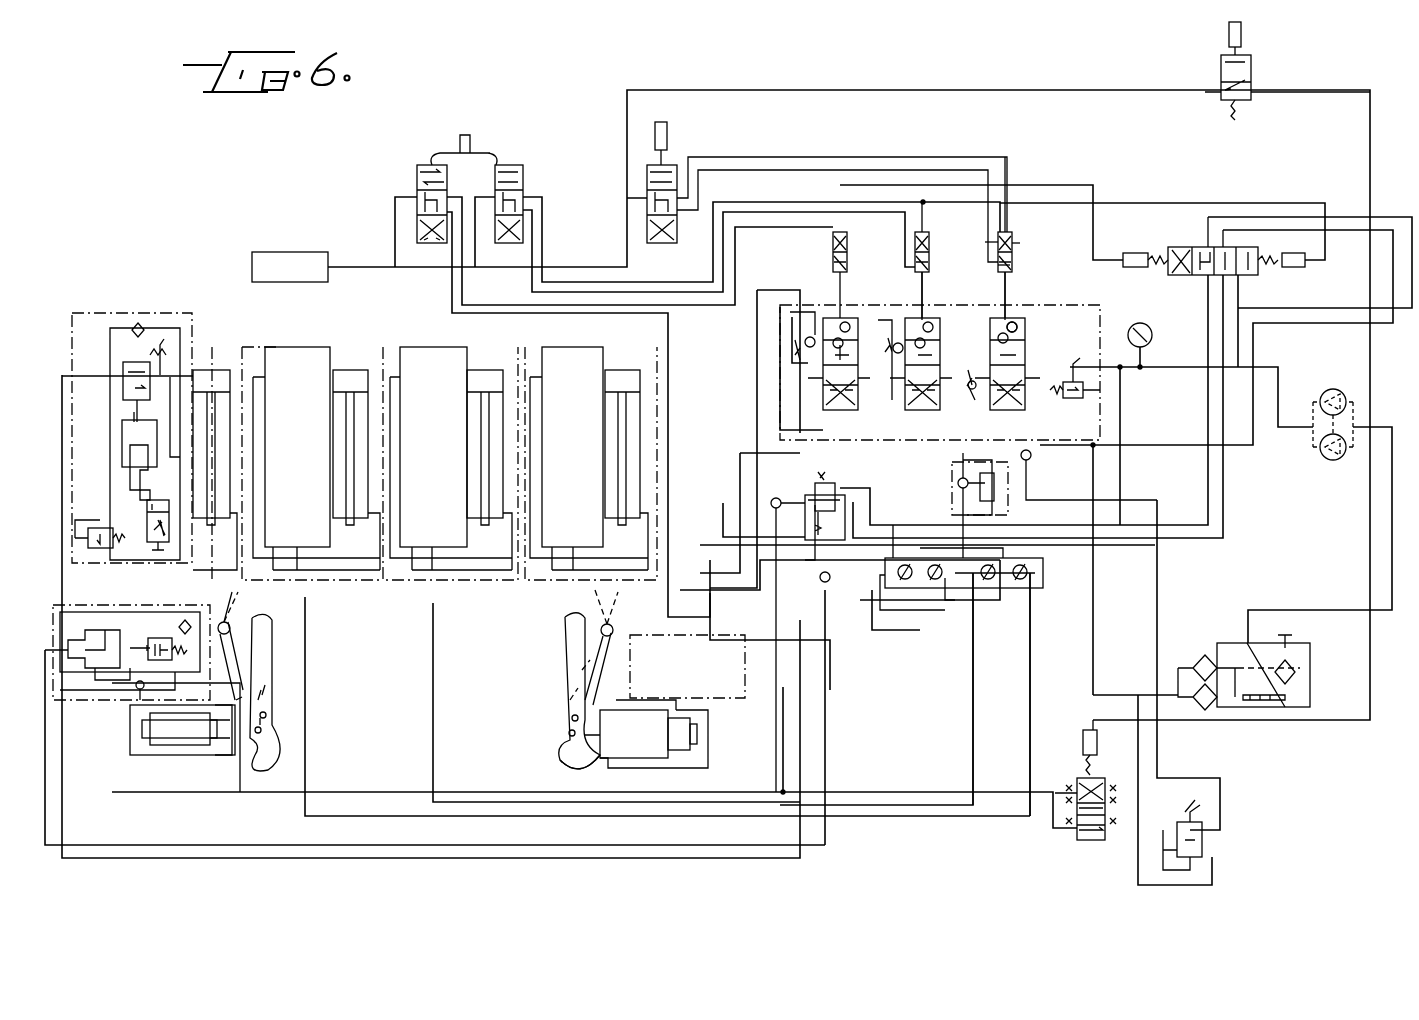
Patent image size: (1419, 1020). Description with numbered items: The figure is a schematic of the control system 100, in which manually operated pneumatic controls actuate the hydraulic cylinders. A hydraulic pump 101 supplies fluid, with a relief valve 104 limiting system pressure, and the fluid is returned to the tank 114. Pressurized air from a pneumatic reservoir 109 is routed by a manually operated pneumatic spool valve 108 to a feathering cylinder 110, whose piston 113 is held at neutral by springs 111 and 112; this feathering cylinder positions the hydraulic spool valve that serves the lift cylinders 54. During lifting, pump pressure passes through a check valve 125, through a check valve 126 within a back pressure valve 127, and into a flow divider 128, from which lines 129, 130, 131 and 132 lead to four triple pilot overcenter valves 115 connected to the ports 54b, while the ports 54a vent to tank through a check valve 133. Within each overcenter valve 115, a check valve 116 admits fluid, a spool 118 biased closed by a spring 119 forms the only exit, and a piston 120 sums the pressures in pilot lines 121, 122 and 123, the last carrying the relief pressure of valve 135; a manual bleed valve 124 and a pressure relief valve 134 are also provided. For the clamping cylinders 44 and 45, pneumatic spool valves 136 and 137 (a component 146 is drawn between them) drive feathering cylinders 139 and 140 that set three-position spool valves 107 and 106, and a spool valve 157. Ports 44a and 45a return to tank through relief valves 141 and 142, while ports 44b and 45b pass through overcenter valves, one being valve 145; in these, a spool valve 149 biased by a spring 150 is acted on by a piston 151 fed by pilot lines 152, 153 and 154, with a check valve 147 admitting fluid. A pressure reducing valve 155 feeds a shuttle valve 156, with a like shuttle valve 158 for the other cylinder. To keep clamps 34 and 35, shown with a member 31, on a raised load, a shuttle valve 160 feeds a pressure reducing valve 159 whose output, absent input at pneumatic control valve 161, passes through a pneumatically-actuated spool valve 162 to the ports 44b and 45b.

The control system 100 is at (223, 183).
The pneumatic reservoir 109 is at (298, 248).
The pneumatic spool valve 136 is at (417, 168).
The manual lever 146 is at (474, 148).
The pneumatic spool valve 137 is at (523, 170).
The pneumatic spool valve 108 is at (673, 165).
The pneumatic control valve 161 is at (1251, 63).
The feathering cylinder 139 is at (833, 244).
The feathering cylinder 140 is at (929, 240).
The feathering cylinder 110 is at (1012, 238).
The spring 111 is at (990, 245).
The spring 112 is at (1000, 266).
The feathering cylinder piston 113 is at (1016, 244).
The spool valve 157 is at (1178, 243).
The triple pilot overcenter valve 115 is at (135, 312).
The check valve 116 is at (143, 325).
The spring 119 is at (140, 355).
The pilot line 122 is at (160, 375).
The lift cylinder port 54b is at (205, 365).
The lift frame actuating cylinder 54 is at (612, 368).
The lift cylinder port 54a is at (645, 522).
The spool 118 is at (126, 390).
The pilot line 121 is at (123, 430).
The piston 120 is at (135, 460).
The pilot line 123 is at (138, 497).
The bleed valve 124 is at (160, 500).
The pressure relief valve 134 is at (98, 548).
The piston 151 is at (120, 628).
The pilot line 152 is at (150, 640).
The spool valve 149 is at (185, 615).
The pilot line 154 is at (108, 640).
The pilot line 153 is at (115, 680).
The spring 150 is at (170, 660).
The check valve 147 is at (137, 688).
The clamping cylinder 44 is at (238, 712).
The clamping cylinder port 44a is at (152, 716).
The clamping cylinder port 44b is at (225, 760).
The lever arm 31 is at (598, 648).
The clamp 34 is at (272, 665).
The clamp 35 is at (563, 668).
The clamping cylinder 45 is at (640, 710).
The clamping cylinder port 45a is at (680, 702).
The clamping cylinder port 45b is at (590, 760).
The three-position spool valve 107 is at (826, 312).
The relief valve 142 is at (878, 317).
The three-position spool valve 106 is at (917, 318).
The relief valve 141 is at (805, 342).
The check valve 133 is at (1000, 338).
The relief valve 135 is at (972, 378).
The triple pilot overcenter valve 145 is at (1025, 320).
The check valve 125 is at (1020, 326).
The relief valve 104 is at (1075, 382).
The hydraulic pump 101 is at (1333, 460).
The pressure reducing valve 155 is at (835, 488).
The shuttle valve 158 is at (771, 502).
The check valve 126 is at (957, 483).
The back pressure valve 127 is at (952, 505).
The shuttle valve 160 is at (1031, 457).
The shuttle valve 156 is at (830, 578).
The flow divider 128 is at (1043, 570).
The line 129 is at (893, 596).
The line 130 is at (928, 612).
The line 131 is at (973, 670).
The line 132 is at (1033, 630).
The tank 114 is at (1199, 642).
The pneumatically-actuated spool valve 162 is at (1072, 840).
The pressure reducing valve 159 is at (1202, 842).